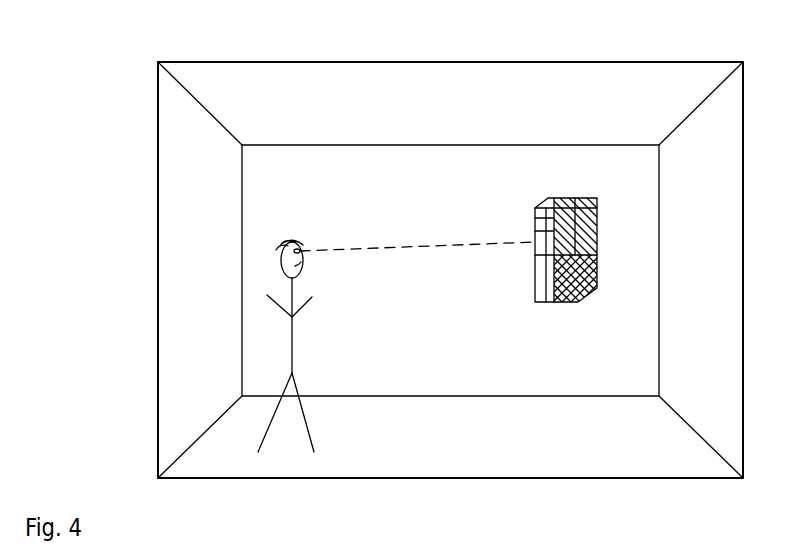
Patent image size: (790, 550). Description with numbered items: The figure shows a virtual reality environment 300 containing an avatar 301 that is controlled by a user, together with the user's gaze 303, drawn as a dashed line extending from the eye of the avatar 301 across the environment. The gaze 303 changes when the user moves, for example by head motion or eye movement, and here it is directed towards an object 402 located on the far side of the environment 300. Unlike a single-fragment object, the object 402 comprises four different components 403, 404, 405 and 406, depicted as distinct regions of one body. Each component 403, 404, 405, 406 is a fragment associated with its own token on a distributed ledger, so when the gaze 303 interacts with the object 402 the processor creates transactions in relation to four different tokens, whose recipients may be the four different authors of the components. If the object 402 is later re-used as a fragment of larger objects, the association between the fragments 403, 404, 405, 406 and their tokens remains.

The virtual reality environment 300 is at (168, 47).
The avatar 301 is at (298, 240).
The user's gaze 303 is at (425, 245).
The object 402 is at (524, 194).
The component 403 is at (560, 207).
The component 404 is at (595, 198).
The component 405 is at (588, 278).
The component 406 is at (542, 282).